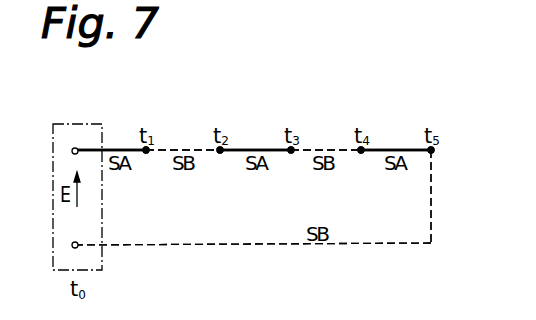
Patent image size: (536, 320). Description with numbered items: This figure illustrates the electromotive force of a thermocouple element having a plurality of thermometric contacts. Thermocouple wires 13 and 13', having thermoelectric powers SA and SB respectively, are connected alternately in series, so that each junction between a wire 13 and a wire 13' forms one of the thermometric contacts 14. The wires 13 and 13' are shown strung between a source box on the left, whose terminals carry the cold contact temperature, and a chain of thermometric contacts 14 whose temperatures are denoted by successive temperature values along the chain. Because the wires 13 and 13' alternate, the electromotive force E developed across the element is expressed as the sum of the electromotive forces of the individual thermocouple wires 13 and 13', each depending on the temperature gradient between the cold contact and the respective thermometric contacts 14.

The thermocouple wire 13 is at (254, 112).
The thermocouple wire 13' is at (254, 188).
The thermometric contact 14 is at (146, 153).